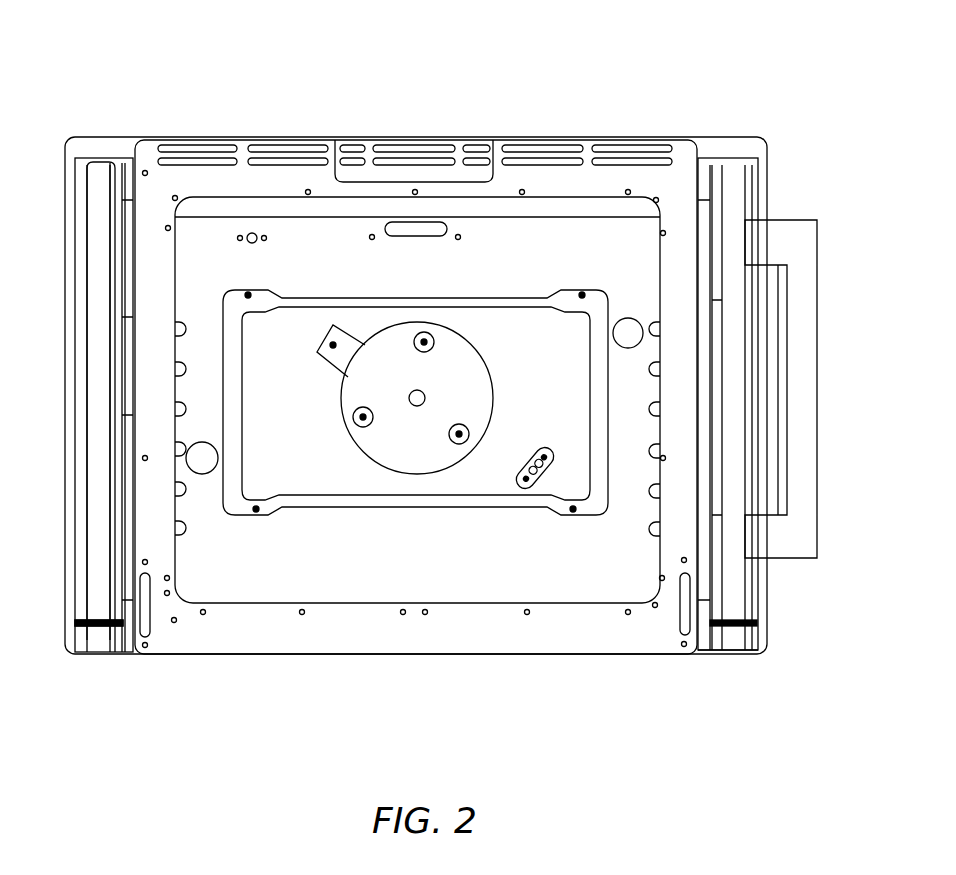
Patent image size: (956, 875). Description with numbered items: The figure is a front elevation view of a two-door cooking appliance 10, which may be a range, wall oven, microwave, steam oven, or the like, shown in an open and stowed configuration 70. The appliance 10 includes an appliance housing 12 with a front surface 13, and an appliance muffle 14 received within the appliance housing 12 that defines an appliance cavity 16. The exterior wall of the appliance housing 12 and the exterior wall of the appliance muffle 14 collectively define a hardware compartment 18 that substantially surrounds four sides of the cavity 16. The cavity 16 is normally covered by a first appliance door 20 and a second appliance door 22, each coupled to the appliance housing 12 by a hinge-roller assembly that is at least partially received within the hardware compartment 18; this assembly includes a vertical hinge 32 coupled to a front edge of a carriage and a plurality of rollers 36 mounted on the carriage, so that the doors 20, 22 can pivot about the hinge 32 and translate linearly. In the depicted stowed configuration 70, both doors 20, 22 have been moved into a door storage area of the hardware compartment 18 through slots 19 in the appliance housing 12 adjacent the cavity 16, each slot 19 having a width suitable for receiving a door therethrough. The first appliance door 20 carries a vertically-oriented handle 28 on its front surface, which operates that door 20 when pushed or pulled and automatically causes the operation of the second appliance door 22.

The cooking appliance 10 is at (608, 83).
The open and stowed configuration 70 is at (730, 57).
The appliance housing 12 is at (712, 150).
The front surface 13 is at (98, 156).
The appliance muffle 14 is at (623, 638).
The appliance cavity 16 is at (353, 562).
The hardware compartment 18 is at (82, 603).
The slots 19 is at (760, 612).
The first appliance door 20 is at (732, 188).
The second appliance door 22 is at (102, 168).
The handle 28 is at (800, 543).
The hinge 32 is at (120, 627).
The rollers 36 is at (130, 328).